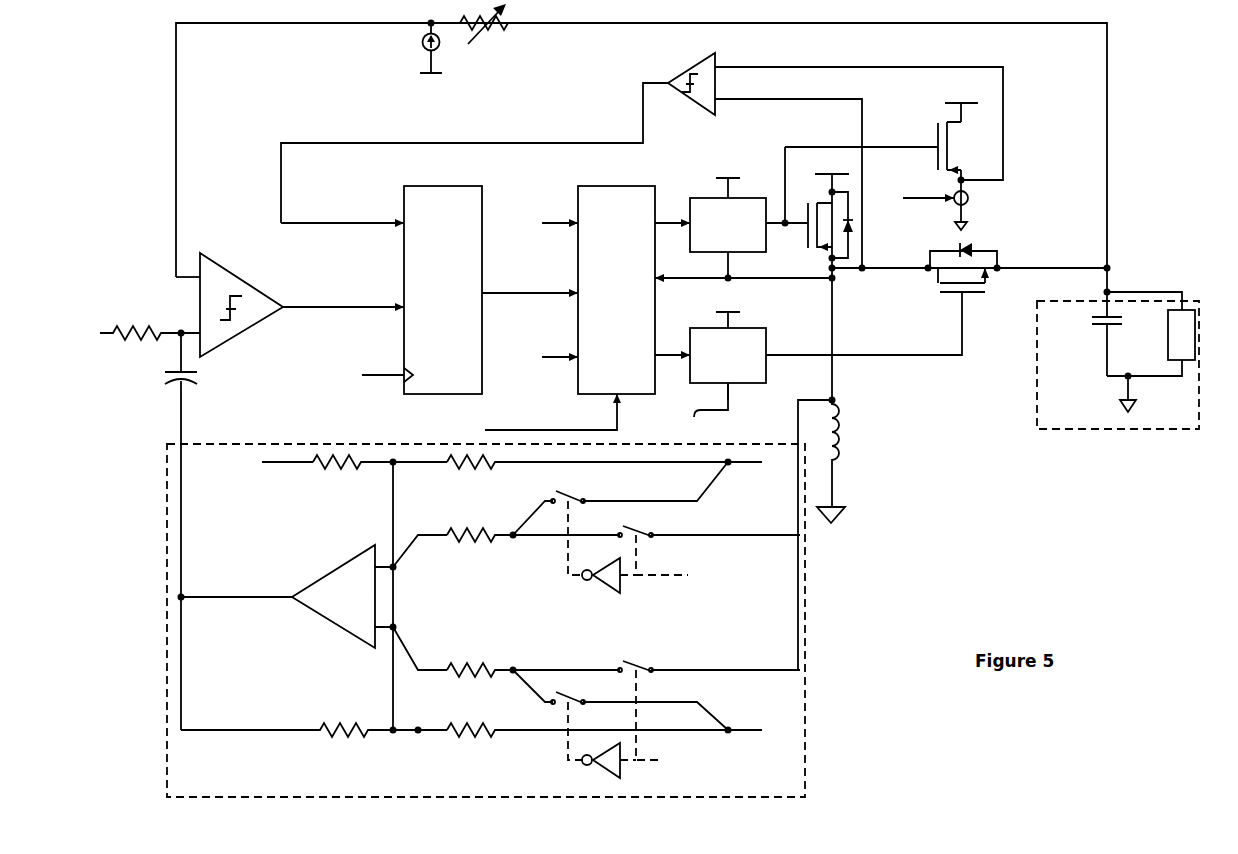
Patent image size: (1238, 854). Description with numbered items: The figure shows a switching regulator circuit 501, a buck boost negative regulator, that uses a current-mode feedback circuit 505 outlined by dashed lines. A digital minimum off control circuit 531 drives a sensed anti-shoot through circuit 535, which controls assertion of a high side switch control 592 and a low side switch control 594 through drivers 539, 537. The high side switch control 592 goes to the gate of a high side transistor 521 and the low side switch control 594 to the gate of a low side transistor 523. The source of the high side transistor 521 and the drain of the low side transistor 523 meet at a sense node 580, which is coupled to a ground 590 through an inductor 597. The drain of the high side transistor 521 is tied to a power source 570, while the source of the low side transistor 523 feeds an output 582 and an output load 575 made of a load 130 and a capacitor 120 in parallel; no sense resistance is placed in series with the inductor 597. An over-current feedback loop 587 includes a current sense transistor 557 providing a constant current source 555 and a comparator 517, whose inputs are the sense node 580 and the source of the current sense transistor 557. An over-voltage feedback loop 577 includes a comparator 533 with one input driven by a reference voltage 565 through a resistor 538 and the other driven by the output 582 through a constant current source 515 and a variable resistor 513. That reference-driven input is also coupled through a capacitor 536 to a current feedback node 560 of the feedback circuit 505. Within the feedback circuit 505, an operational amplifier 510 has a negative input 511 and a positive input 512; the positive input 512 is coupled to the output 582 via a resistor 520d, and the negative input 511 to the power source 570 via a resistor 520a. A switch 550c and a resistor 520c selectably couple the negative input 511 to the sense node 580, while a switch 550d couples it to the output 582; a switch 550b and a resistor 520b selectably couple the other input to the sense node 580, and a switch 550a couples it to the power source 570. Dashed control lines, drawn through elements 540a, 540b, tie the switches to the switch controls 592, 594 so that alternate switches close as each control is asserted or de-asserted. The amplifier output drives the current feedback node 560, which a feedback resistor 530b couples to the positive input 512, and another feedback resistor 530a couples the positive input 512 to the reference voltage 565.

The switching regulator circuit 501 is at (102, 93).
The over-voltage feedback loop 577 is at (270, 46).
The over-current feedback loop 587 is at (566, 124).
The resistor 513 is at (503, 32).
The constant current source 515 is at (439, 52).
The comparator 517 is at (692, 85).
The current sense transistor 557 is at (938, 119).
The power source 570 is at (828, 161).
The high side switch control 592 is at (545, 361).
The constant current source 555 is at (952, 213).
The output 582 is at (1125, 247).
The low side switch control 594 is at (549, 223).
The digital minimum off control circuit 531 is at (455, 290).
The sensed anti-shoot through circuit 535 is at (649, 308).
The driver 539 is at (749, 219).
The driver 537 is at (826, 353).
The high side transistor 521 is at (806, 244).
The low side transistor 523 is at (928, 290).
The sense node 580 is at (836, 400).
The inductor 597 is at (838, 461).
The ground 590 is at (842, 516).
The capacitor 120 is at (1096, 320).
The load 130 is at (1192, 376).
The output load 575 is at (1120, 359).
The resistor 538 is at (151, 322).
The reference voltage 565 is at (100, 333).
The capacitor 536 is at (172, 374).
The comparator 533 is at (217, 357).
The feedback resistor 530a is at (354, 468).
The feedback resistor 530b is at (365, 736).
The resistor 520a is at (488, 468).
The resistor 520b is at (480, 535).
The resistor 520c is at (480, 665).
The resistor 520d is at (480, 736).
The switch 550a is at (567, 499).
The switch 550b is at (655, 533).
The switch 550c is at (655, 668).
The switch 550d is at (567, 700).
The inverter 540a is at (600, 585).
The inverter 540b is at (600, 771).
The negative input 511 is at (389, 560).
The positive input 512 is at (389, 635).
The operational amplifier 510 is at (357, 596).
The current feedback node 560 is at (187, 602).
The current-mode feedback circuit 505 is at (486, 620).